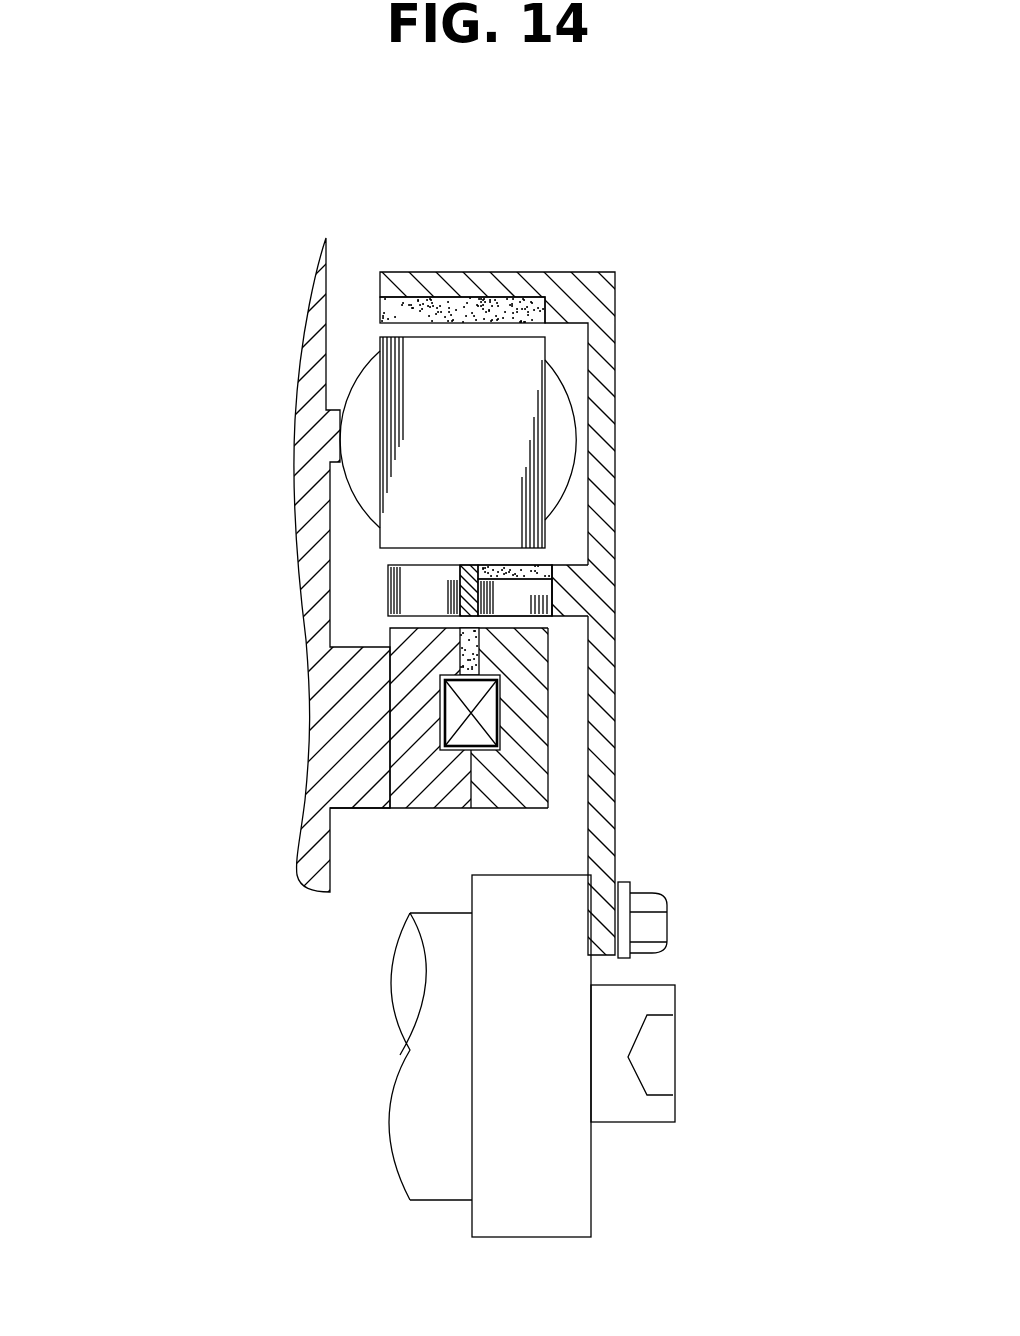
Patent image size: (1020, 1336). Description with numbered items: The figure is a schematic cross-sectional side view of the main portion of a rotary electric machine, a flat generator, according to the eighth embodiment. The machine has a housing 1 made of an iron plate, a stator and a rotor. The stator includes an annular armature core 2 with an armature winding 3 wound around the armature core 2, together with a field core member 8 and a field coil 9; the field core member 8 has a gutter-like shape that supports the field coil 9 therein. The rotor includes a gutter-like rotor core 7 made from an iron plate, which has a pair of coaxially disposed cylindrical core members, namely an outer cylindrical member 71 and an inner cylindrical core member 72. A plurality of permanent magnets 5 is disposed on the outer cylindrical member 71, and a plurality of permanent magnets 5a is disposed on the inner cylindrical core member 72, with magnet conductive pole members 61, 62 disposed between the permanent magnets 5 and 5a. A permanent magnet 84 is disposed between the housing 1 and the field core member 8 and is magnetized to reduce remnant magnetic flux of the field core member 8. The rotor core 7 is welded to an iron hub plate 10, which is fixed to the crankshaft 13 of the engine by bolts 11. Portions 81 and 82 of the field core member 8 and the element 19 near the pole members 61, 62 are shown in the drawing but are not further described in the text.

The housing 1 is at (310, 345).
The armature core 2 is at (428, 422).
The armature winding 3 is at (565, 430).
The permanent magnets 5 is at (430, 300).
The permanent magnets 5a is at (548, 566).
The rotor core 7 is at (627, 485).
The outer cylindrical member 71 is at (568, 294).
The inner cylindrical core member 72 is at (604, 572).
The field core member 8 is at (383, 742).
The bracket base portion 81 is at (452, 780).
The bracket side portion 82 is at (540, 733).
The permanent magnet 84 is at (462, 653).
The field coil 9 is at (447, 734).
The hub plate 10 is at (607, 767).
The bolts 11 is at (652, 927).
The crankshaft 13 is at (458, 963).
The bobbin flange 19 is at (475, 602).
The magnet conductive pole members 61 is at (417, 584).
The magnet conductive pole members 62 is at (517, 591).